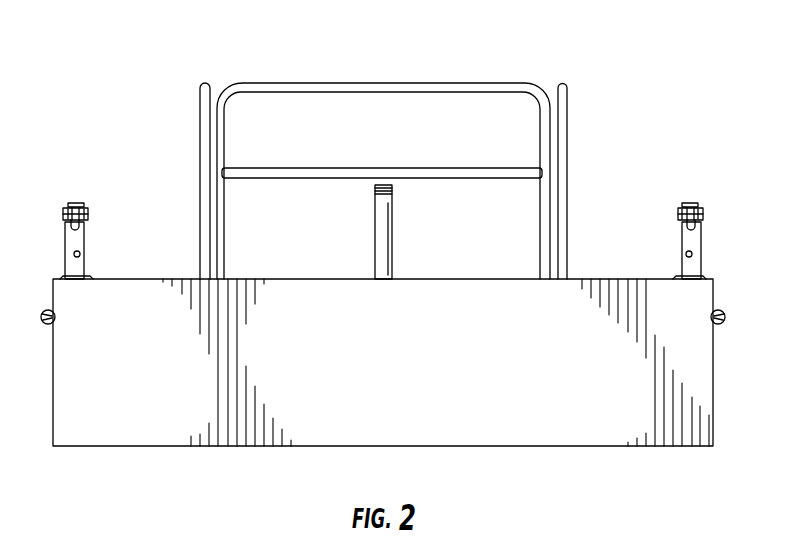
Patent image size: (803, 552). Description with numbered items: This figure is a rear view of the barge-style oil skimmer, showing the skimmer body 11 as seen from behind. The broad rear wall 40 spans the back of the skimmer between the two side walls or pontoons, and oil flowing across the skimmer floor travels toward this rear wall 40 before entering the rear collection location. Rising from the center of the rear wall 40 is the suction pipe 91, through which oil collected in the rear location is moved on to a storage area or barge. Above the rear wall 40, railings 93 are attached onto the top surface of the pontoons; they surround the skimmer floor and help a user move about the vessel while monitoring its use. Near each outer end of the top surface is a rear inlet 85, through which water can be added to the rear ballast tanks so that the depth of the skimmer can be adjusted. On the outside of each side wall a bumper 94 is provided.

The body 11 is at (155, 422).
The rear wall 40 is at (401, 370).
The rear inlet 85 is at (65, 255).
The suction pipe 91 is at (382, 233).
The railing 93 is at (200, 105).
The bumper 94 is at (42, 322).